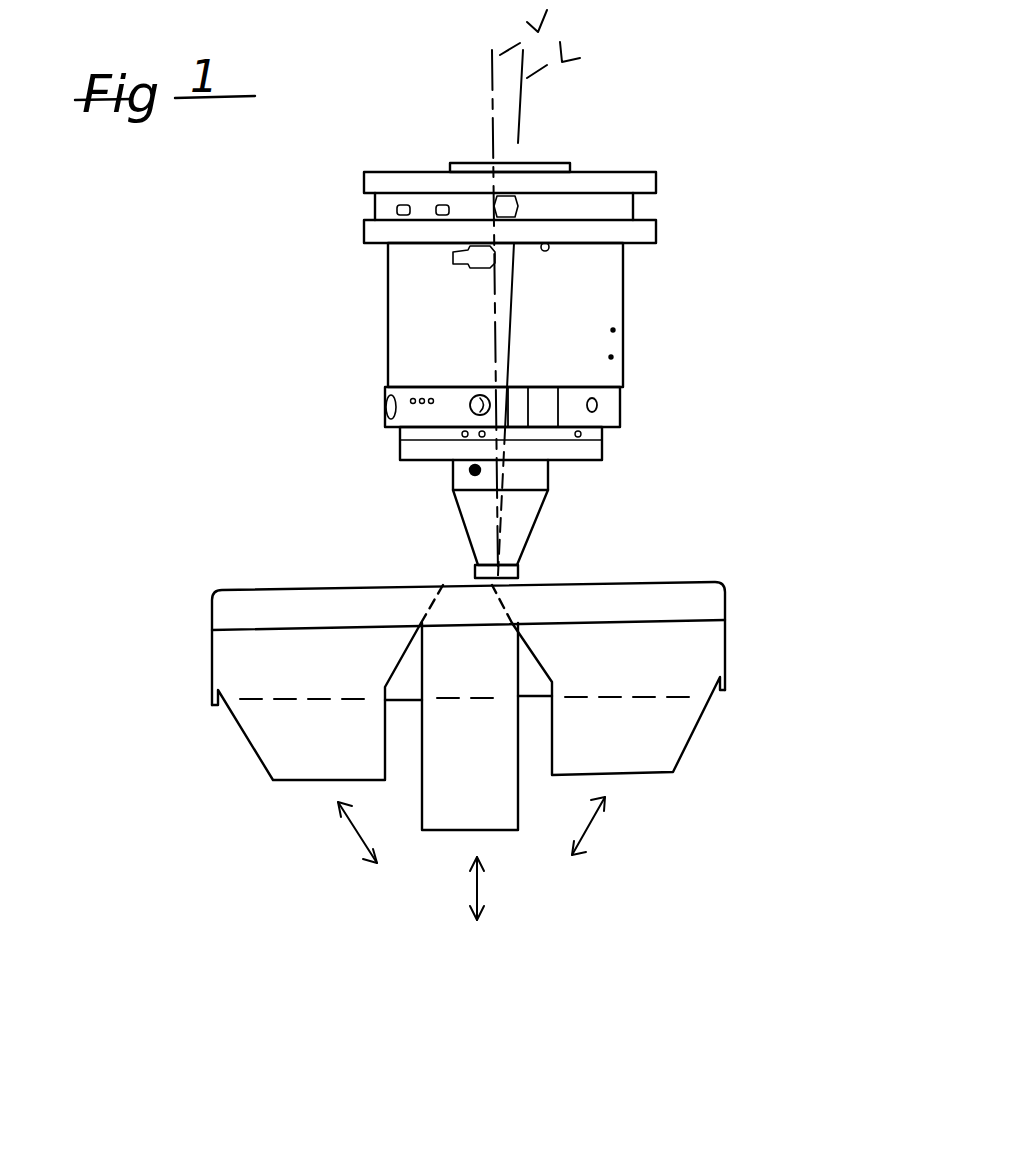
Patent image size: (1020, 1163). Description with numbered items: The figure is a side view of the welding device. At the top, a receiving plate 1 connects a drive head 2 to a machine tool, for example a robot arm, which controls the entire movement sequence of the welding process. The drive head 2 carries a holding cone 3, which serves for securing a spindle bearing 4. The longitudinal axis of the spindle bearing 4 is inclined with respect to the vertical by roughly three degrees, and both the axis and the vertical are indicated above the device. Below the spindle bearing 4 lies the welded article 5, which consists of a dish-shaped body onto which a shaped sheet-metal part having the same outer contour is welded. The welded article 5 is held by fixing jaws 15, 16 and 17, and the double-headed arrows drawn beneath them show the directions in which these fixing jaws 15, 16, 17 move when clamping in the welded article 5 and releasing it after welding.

The receiving plate 1 is at (512, 163).
The drive head 2 is at (568, 306).
The holding cone 3 is at (520, 507).
The spindle bearing 4 is at (503, 575).
The welded article 5 is at (623, 592).
The fixing jaw 15 is at (282, 757).
The fixing jaw 16 is at (663, 740).
The fixing jaw 17 is at (497, 815).